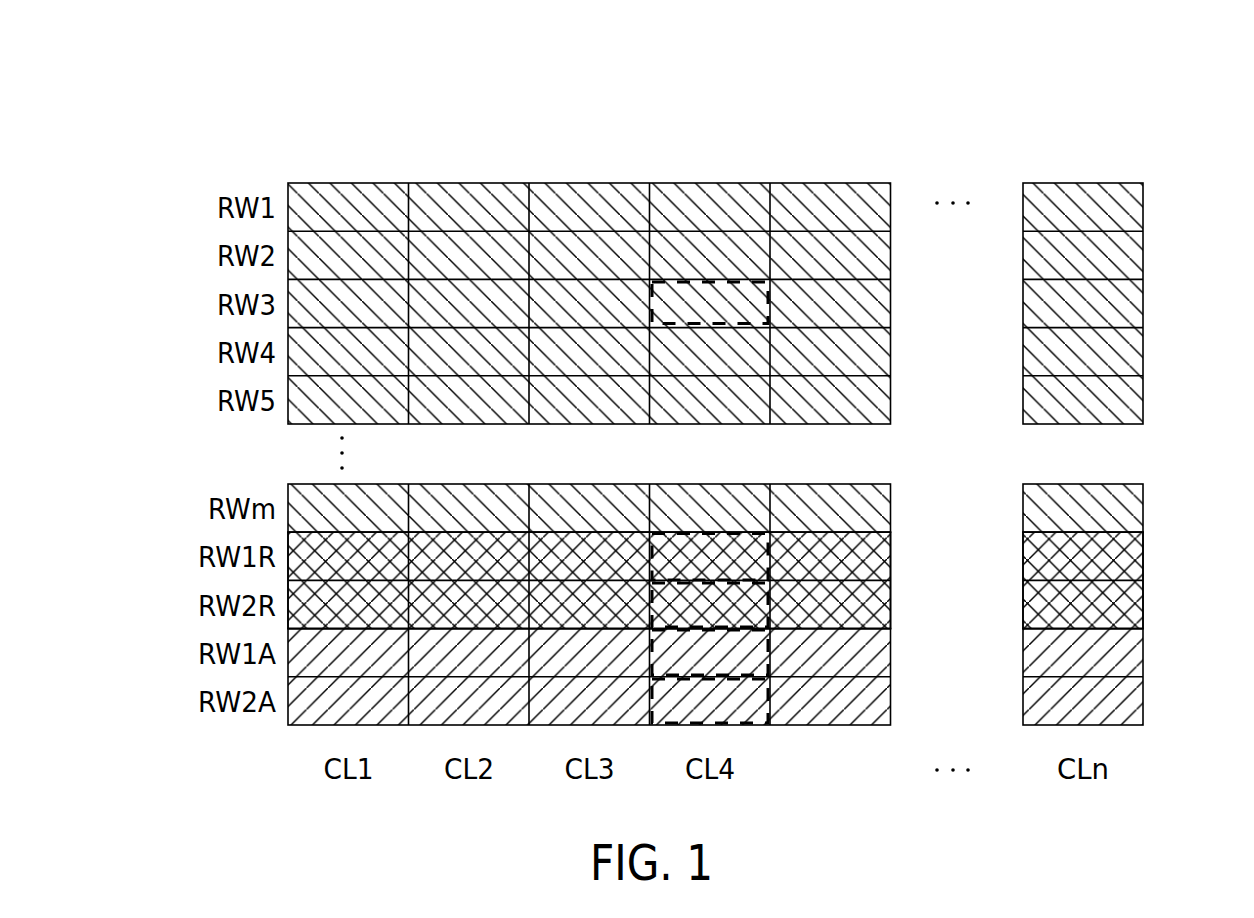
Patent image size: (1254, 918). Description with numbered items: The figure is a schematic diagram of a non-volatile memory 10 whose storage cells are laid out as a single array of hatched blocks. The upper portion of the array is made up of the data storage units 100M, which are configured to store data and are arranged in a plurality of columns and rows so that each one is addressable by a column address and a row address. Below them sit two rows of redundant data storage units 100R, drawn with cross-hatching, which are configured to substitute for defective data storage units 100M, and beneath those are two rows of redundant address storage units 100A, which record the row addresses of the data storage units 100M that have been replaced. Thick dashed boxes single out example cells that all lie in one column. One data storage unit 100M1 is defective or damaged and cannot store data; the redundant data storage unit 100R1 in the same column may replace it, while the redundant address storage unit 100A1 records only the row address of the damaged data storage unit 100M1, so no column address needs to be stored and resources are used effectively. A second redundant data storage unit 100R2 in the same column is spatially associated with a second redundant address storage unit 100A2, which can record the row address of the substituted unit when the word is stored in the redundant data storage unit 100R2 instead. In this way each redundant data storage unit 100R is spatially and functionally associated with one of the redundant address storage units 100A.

The non-volatile memory 10 is at (182, 96).
The data storage units 100M is at (764, 357).
The data storage unit 100M1 is at (768, 317).
The redundant data storage units 100R is at (715, 582).
The redundant data storage unit 100R1 is at (768, 567).
The redundant data storage unit 100R2 is at (768, 617).
The redundant address storage units 100A is at (761, 678).
The redundant address storage unit 100A1 is at (768, 665).
The redundant address storage unit 100A2 is at (768, 713).